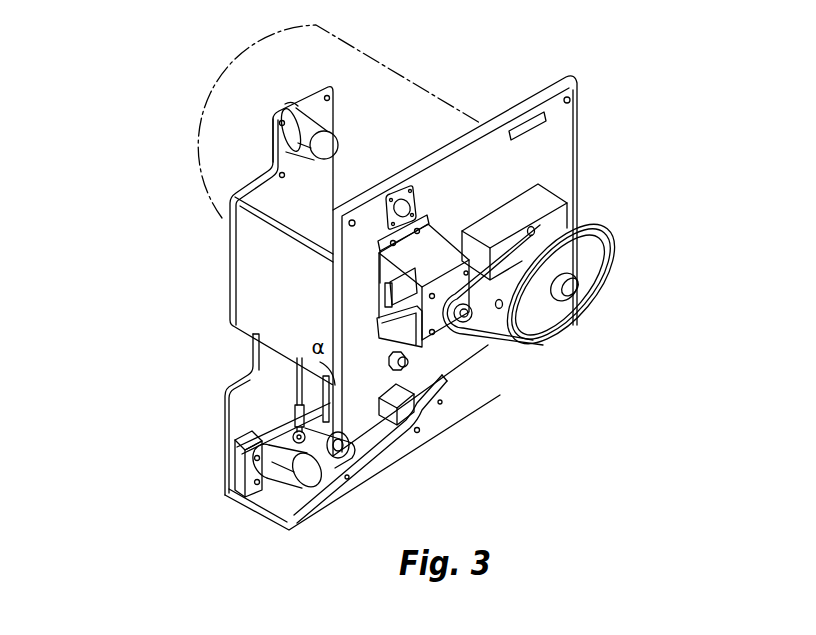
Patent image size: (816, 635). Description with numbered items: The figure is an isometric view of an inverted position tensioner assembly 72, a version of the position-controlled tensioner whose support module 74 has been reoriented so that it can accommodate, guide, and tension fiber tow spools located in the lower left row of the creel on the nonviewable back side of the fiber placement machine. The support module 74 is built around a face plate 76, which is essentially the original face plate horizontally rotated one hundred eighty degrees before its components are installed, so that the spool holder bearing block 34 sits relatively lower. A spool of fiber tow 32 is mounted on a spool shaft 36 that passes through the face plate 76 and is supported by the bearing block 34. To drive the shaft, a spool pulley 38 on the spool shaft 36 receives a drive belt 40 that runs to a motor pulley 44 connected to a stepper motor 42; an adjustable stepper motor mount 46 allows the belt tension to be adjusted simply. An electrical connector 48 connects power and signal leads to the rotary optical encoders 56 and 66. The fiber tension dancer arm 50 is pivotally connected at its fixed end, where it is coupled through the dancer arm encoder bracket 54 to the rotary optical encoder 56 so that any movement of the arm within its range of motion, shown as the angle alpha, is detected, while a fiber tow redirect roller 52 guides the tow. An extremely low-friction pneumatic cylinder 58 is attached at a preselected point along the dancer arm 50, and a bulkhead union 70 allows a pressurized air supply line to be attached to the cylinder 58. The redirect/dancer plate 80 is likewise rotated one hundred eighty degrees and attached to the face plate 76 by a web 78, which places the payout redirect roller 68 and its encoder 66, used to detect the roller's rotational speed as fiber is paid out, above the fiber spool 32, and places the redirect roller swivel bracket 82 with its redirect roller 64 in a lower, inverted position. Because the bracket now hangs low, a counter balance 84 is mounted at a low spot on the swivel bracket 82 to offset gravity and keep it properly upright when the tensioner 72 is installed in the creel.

The spool of fiber tow 32 is at (361, 124).
The bearing block 34 is at (543, 194).
The spool shaft 36 is at (575, 287).
The spool pulley 38 is at (570, 314).
The drive belt 40 is at (605, 232).
The stepper motor 42 is at (410, 266).
The motor pulley 44 is at (527, 342).
The adjustable stepper motor mount 46 is at (385, 303).
The electrical connector 48 is at (405, 187).
The fiber tension dancer arm 50 is at (317, 467).
The fiber tow redirect roller 52 is at (370, 457).
The dancer arm encoder bracket 54 is at (240, 465).
The rotary optical encoder 56 is at (308, 480).
The pneumatic cylinder 58 is at (293, 396).
The redirect roller 64 is at (416, 392).
The rotary optical encoder 66 is at (271, 156).
The payout redirect roller 68 is at (268, 152).
The bulkhead union 70 is at (410, 364).
The inverted position tensioner assembly 72 is at (126, 438).
The support module 74 is at (218, 420).
The face plate 76 is at (464, 193).
The web 78 is at (258, 289).
The redirect/dancer plate 80 is at (256, 367).
The redirect roller swivel bracket 82 is at (445, 398).
The counter balance 84 is at (417, 433).